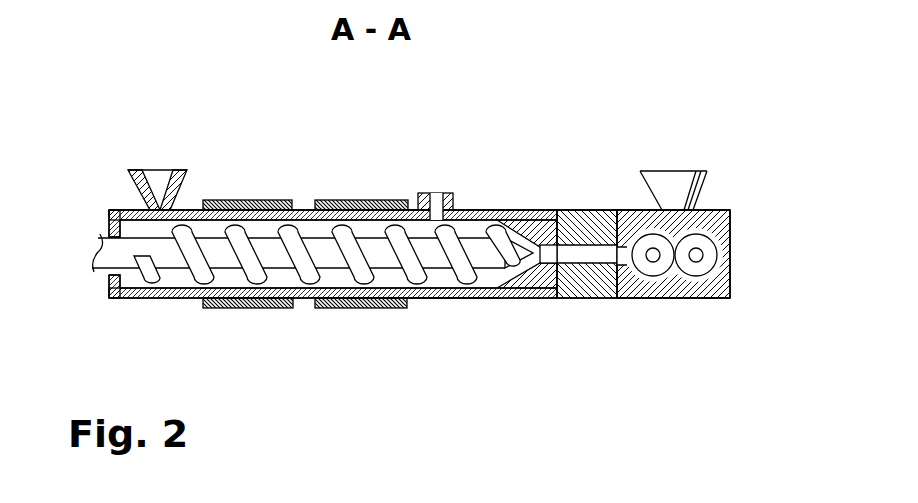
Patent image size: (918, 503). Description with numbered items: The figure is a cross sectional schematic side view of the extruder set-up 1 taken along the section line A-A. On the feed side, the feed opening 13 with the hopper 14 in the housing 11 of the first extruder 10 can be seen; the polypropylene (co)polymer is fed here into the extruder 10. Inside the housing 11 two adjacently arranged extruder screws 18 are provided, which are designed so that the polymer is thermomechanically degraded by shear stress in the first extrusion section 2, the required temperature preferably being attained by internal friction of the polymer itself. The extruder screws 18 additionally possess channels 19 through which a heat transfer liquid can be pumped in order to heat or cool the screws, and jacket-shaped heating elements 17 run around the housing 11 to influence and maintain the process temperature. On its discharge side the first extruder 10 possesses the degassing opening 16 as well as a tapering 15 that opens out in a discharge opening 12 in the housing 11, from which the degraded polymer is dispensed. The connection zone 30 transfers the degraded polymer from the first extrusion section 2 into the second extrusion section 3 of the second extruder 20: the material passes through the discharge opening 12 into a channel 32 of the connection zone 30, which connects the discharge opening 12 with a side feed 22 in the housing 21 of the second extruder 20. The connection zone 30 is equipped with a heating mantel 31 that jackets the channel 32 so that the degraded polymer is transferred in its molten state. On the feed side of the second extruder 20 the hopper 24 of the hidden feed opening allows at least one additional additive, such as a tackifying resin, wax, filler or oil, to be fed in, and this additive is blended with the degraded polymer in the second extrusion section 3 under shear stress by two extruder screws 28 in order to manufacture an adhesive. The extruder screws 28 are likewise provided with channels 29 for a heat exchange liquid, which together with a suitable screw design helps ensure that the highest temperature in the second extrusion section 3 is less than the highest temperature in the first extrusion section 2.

The extruder set-up 1 is at (288, 103).
The first extrusion section 2 is at (413, 168).
The second extrusion section 3 is at (730, 193).
The first extruder 10 is at (240, 311).
The housing 11 is at (300, 203).
The discharge opening 12 is at (549, 243).
The feed opening 13 is at (142, 201).
The hopper 14 is at (151, 156).
The tapering 15 is at (532, 208).
The degassing opening 16 is at (438, 193).
The heating elements 17 is at (360, 200).
The extruder screws 18 is at (450, 300).
The channels 19 is at (387, 308).
The second extruder 20 is at (727, 300).
The housing 21 is at (730, 218).
The side feed 22 is at (614, 258).
The hopper 24 is at (675, 183).
The extruder screws 28 is at (713, 257).
The channels 29 is at (655, 260).
The connection zone 30 is at (588, 208).
The heating mantel 31 is at (562, 298).
The channel 32 is at (584, 253).